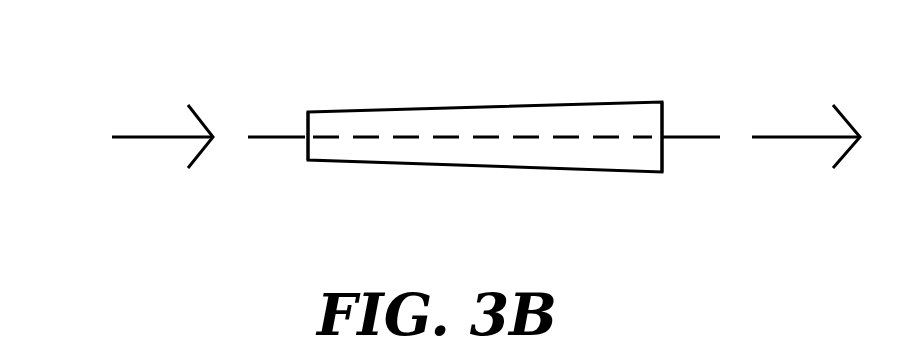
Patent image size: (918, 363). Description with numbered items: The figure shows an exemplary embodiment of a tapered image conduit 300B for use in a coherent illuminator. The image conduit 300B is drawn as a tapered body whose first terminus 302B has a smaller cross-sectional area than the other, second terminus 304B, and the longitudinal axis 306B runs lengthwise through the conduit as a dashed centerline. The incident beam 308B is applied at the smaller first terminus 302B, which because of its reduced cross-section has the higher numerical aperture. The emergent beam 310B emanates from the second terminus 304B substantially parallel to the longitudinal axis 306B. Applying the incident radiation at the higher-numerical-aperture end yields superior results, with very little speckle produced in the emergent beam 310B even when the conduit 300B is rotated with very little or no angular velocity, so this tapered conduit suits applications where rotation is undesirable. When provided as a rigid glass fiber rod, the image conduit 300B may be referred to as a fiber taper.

The image conduit 300B is at (477, 105).
The first terminus 302B is at (308, 143).
The second terminus 304B is at (662, 167).
The longitudinal axis 306B is at (278, 135).
The incident beam 308B is at (155, 137).
The emergent beam 310B is at (795, 135).